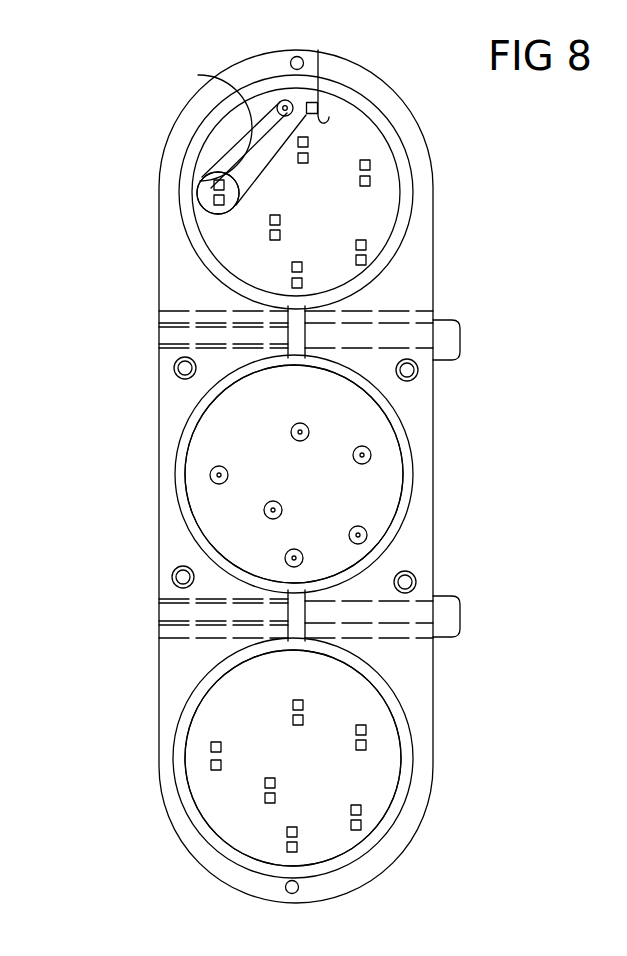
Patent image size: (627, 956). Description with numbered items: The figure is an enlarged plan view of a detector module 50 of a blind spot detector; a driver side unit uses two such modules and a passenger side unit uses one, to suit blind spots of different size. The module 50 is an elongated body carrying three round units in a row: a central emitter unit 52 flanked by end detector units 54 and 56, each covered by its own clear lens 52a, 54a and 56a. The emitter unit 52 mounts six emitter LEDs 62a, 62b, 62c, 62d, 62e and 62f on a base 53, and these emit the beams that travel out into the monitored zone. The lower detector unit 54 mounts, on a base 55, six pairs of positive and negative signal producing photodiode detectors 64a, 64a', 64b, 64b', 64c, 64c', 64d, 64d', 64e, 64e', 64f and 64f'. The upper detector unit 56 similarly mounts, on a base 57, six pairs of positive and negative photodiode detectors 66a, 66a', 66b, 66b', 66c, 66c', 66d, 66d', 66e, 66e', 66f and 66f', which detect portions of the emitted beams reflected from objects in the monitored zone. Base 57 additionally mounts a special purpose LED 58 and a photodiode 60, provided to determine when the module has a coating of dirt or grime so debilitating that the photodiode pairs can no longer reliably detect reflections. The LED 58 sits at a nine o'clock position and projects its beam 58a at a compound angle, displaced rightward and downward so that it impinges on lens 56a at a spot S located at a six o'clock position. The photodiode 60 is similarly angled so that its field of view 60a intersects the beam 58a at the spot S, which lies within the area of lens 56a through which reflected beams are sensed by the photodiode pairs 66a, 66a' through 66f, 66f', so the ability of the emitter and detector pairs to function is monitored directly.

The detector module 50 is at (159, 305).
The central emitter unit 52 is at (407, 454).
The clear lens 52a is at (397, 487).
The base 53 is at (223, 420).
The end detector unit 54 is at (412, 742).
The clear lens 54a is at (386, 838).
The base 55 is at (222, 700).
The end detector unit 56 is at (402, 152).
The clear lens 56a is at (398, 215).
The base 57 is at (220, 214).
The special purpose LED 58 is at (277, 104).
The beam 58a is at (213, 76).
The photodiode 60 is at (318, 64).
The field of view 60a is at (329, 130).
The spot S is at (197, 193).
The emitter LED 62a is at (370, 450).
The emitter LED 62b is at (367, 530).
The emitter LED 62c is at (285, 560).
The emitter LED 62d is at (264, 511).
The emitter LED 62e is at (213, 468).
The emitter LED 62f is at (307, 424).
The positive signal producing photodiode detector 64a is at (425, 735).
The negative signal producing photodiode detector 64a' is at (429, 715).
The positive signal producing photodiode detector 64b is at (426, 813).
The negative signal producing photodiode detector 64b' is at (428, 793).
The positive signal producing photodiode detector 64c is at (355, 874).
The negative signal producing photodiode detector 64c' is at (377, 855).
The positive signal producing photodiode detector 64d is at (183, 804).
The negative signal producing photodiode detector 64d' is at (176, 774).
The positive signal producing photodiode detector 64e is at (149, 745).
The negative signal producing photodiode detector 64e' is at (159, 717).
The positive signal producing photodiode detector 64f is at (394, 695).
The negative signal producing photodiode detector 64f' is at (397, 675).
The positive signal producing photodiode detector 66a is at (435, 195).
The negative signal producing photodiode detector 66a' is at (436, 172).
The positive signal producing photodiode detector 66b is at (441, 276).
The negative signal producing photodiode detector 66b' is at (440, 256).
The positive signal producing photodiode detector 66c is at (402, 303).
The negative signal producing photodiode detector 66c' is at (193, 280).
The positive signal producing photodiode detector 66d is at (182, 248).
The negative signal producing photodiode detector 66d' is at (181, 222).
The positive signal producing photodiode detector 66e is at (163, 162).
The negative signal producing photodiode detector 66e' is at (165, 141).
The positive signal producing photodiode detector 66f is at (384, 129).
The negative signal producing photodiode detector 66f' is at (375, 109).